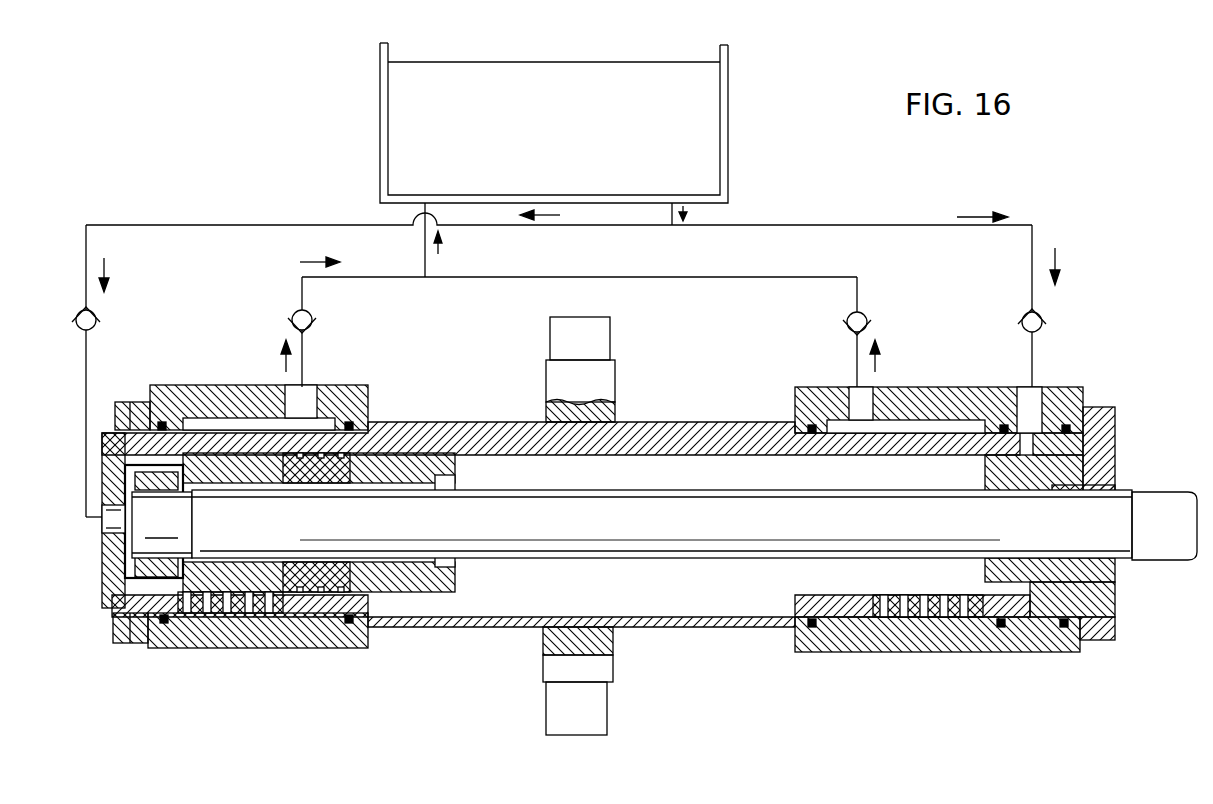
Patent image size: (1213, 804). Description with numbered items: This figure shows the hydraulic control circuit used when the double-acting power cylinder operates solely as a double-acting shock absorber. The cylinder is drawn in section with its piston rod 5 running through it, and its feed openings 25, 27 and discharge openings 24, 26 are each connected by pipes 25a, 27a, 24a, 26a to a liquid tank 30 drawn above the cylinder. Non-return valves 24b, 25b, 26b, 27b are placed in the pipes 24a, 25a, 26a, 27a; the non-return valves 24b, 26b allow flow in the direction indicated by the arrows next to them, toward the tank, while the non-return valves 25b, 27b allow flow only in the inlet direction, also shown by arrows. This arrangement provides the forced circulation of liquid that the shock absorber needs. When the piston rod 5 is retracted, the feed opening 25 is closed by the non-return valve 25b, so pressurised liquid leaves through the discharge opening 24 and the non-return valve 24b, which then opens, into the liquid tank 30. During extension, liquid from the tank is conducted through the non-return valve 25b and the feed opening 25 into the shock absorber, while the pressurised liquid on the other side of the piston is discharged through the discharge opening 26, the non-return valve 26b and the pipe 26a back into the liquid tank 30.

The piston rod 5 is at (700, 555).
The discharge opening 24 is at (307, 393).
The pipe 24a is at (355, 278).
The non-return valve 24b is at (293, 311).
The feed opening 25 is at (106, 524).
The pipe 25a is at (88, 365).
The non-return valve 25b is at (97, 322).
The discharge opening 26 is at (868, 387).
The pipe 26a is at (855, 363).
The non-return valve 26b is at (867, 320).
The feed opening 27 is at (1016, 388).
The pipe 27a is at (1038, 348).
The non-return valve 27b is at (1043, 313).
The liquid tank 30 is at (728, 124).